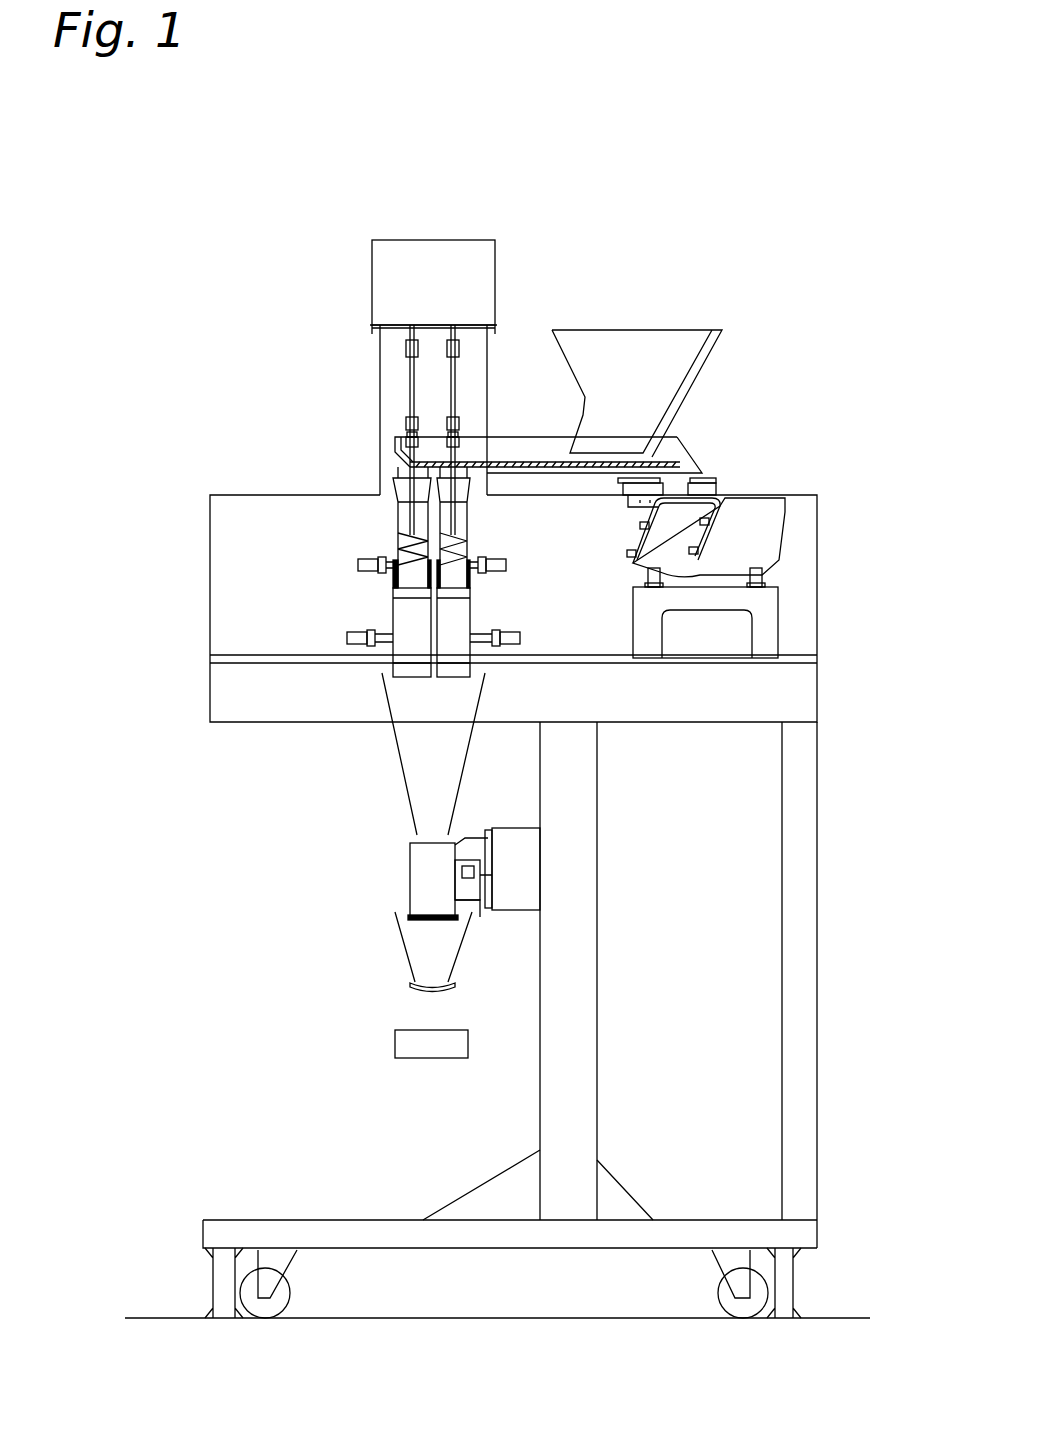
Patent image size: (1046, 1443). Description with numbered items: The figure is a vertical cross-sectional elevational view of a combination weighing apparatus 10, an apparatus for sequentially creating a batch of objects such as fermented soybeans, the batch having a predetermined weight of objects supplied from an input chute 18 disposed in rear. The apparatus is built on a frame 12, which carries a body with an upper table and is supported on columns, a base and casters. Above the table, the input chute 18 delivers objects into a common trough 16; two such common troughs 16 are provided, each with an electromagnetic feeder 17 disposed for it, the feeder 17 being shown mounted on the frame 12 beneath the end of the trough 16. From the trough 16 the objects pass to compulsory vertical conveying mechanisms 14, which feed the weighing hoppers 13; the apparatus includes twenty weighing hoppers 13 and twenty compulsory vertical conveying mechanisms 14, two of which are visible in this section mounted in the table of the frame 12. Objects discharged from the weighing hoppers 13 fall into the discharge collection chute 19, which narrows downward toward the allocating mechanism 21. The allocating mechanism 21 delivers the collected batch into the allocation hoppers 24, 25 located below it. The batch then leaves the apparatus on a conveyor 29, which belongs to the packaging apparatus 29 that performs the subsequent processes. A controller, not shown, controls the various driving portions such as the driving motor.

The combination weighing apparatus 10 is at (684, 256).
The frame 12 is at (820, 684).
The weighing hoppers 13 is at (390, 609).
The compulsory vertical conveying mechanisms 14 is at (390, 543).
The common troughs 16 is at (521, 434).
The electromagnetic feeders 17 is at (628, 568).
The input chute 18 is at (710, 362).
The discharge collection chute 19 is at (390, 750).
The allocating mechanism 21 is at (406, 872).
The allocation hopper 24 is at (402, 956).
The allocation hopper 25 is at (433, 952).
The conveyor 29 is at (406, 1064).